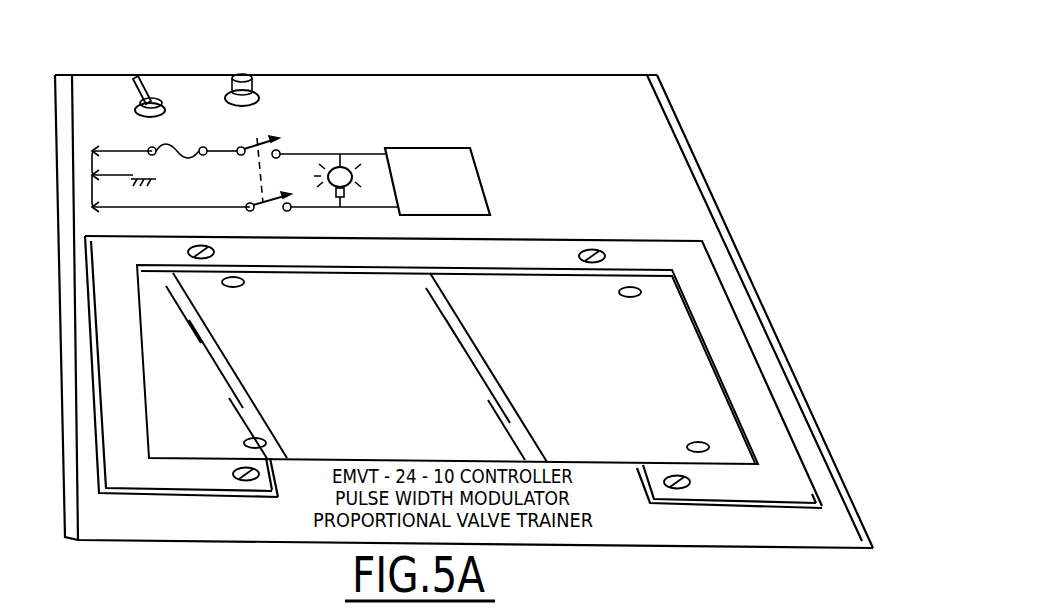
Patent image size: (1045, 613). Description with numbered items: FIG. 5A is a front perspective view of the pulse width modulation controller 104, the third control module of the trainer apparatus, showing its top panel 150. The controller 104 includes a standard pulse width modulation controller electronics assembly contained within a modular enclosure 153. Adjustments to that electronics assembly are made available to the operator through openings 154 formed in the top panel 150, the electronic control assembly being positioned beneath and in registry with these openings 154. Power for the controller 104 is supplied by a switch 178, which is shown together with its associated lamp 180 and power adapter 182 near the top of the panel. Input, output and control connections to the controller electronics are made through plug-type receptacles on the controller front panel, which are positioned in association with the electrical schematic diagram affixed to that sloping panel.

The pulse width modulation controller 104 is at (722, 122).
The top panel 150 is at (713, 246).
The modular enclosure 153 is at (824, 423).
The openings 154 is at (692, 440).
The switch 178 is at (258, 138).
The lamp 180 is at (335, 157).
The power adapter 182 is at (472, 147).